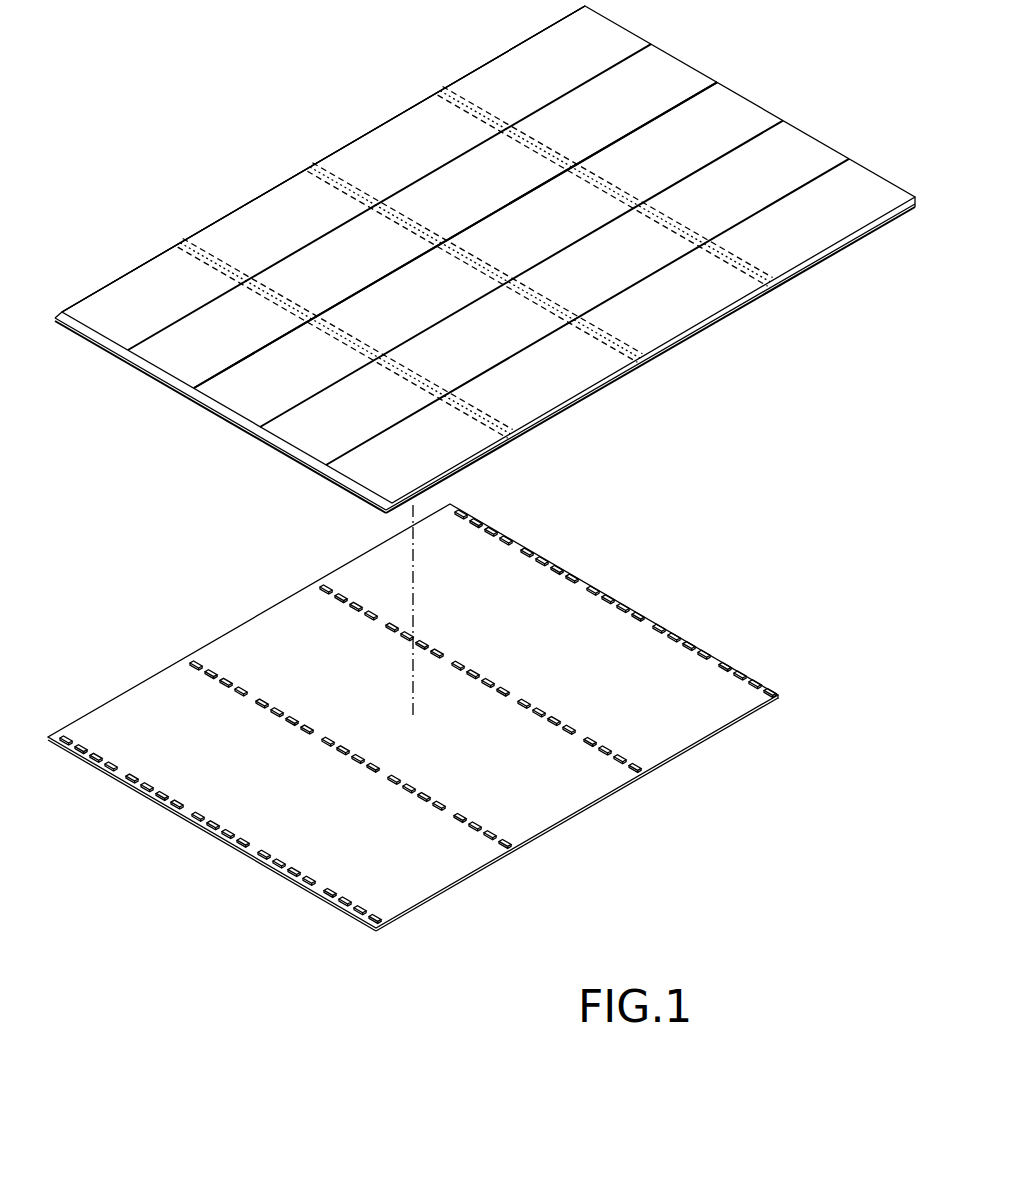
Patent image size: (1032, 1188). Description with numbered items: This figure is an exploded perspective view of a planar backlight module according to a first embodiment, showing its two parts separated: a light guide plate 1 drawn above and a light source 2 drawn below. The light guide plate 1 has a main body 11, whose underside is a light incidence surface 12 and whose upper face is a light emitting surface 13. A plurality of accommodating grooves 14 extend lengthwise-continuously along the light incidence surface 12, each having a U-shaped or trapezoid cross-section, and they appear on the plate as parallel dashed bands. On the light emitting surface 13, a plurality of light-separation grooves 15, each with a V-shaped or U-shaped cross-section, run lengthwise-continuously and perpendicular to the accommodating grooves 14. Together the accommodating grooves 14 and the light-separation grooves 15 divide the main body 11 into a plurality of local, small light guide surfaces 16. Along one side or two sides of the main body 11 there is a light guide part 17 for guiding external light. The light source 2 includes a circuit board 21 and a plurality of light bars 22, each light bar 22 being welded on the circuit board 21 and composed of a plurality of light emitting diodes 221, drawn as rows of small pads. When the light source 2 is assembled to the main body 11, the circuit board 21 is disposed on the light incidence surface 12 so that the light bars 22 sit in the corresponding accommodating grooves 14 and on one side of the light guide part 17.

The light guide plate 1 is at (485, 259).
The main body 11 is at (331, 154).
The light incidence surface 12 is at (708, 323).
The light emitting surface 13 is at (733, 108).
The accommodating groove 14 is at (640, 357).
The light-separation groove 15 is at (680, 102).
The light guide surface 16 is at (257, 218).
The light guide part 17 is at (220, 408).
The light source 2 is at (413, 717).
The circuit board 21 is at (567, 808).
The light bar 22 is at (660, 778).
The light emitting diode 221 is at (605, 745).